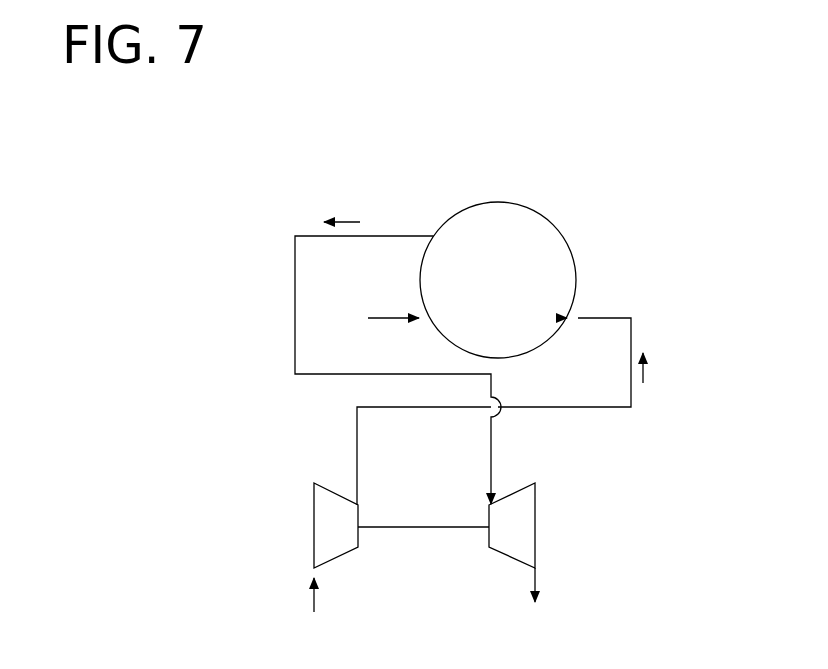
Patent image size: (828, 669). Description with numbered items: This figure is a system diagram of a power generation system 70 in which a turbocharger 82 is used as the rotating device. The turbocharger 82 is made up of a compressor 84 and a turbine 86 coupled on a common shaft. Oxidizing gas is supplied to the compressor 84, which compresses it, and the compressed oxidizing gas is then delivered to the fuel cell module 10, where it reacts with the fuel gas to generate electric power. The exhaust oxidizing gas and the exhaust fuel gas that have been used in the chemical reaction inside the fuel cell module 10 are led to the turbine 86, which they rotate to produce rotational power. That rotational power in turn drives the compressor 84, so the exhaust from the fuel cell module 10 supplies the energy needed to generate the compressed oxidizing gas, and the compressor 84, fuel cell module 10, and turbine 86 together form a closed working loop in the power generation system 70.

The power generation system 70 is at (498, 127).
The fuel cell module 10 is at (518, 204).
The turbocharger 82 is at (310, 465).
The compressor 84 is at (313, 517).
The turbine 86 is at (513, 563).